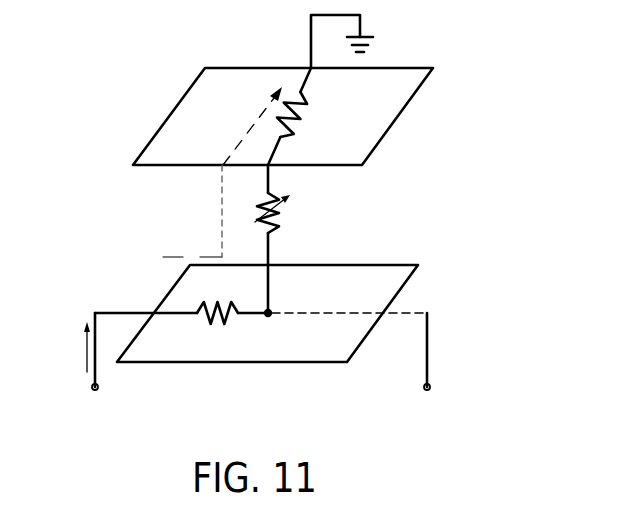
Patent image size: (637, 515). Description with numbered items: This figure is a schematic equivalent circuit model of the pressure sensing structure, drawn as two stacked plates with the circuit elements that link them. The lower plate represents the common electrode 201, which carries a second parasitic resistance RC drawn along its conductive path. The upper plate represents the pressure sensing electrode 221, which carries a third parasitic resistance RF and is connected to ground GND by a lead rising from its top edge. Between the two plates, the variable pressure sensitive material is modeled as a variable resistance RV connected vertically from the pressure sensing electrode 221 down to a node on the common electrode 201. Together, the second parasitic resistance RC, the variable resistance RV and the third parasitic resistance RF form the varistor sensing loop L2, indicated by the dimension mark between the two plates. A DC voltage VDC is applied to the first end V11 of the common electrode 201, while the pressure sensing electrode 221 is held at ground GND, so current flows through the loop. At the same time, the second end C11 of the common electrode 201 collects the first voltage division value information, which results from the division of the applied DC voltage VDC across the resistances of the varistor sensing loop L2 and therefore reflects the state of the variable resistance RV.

The pressure sensing electrode 221 is at (398, 113).
The common electrode 201 is at (410, 283).
The ground GND is at (370, 41).
The third parasitic resistance RF is at (300, 116).
The variable resistance RV is at (284, 239).
The second parasitic resistance RC is at (181, 296).
The varistor sensing loop L2 is at (192, 211).
The first end of the common electrode V11 is at (96, 365).
The second end of the common electrode C11 is at (428, 365).
The DC voltage VDC is at (66, 347).